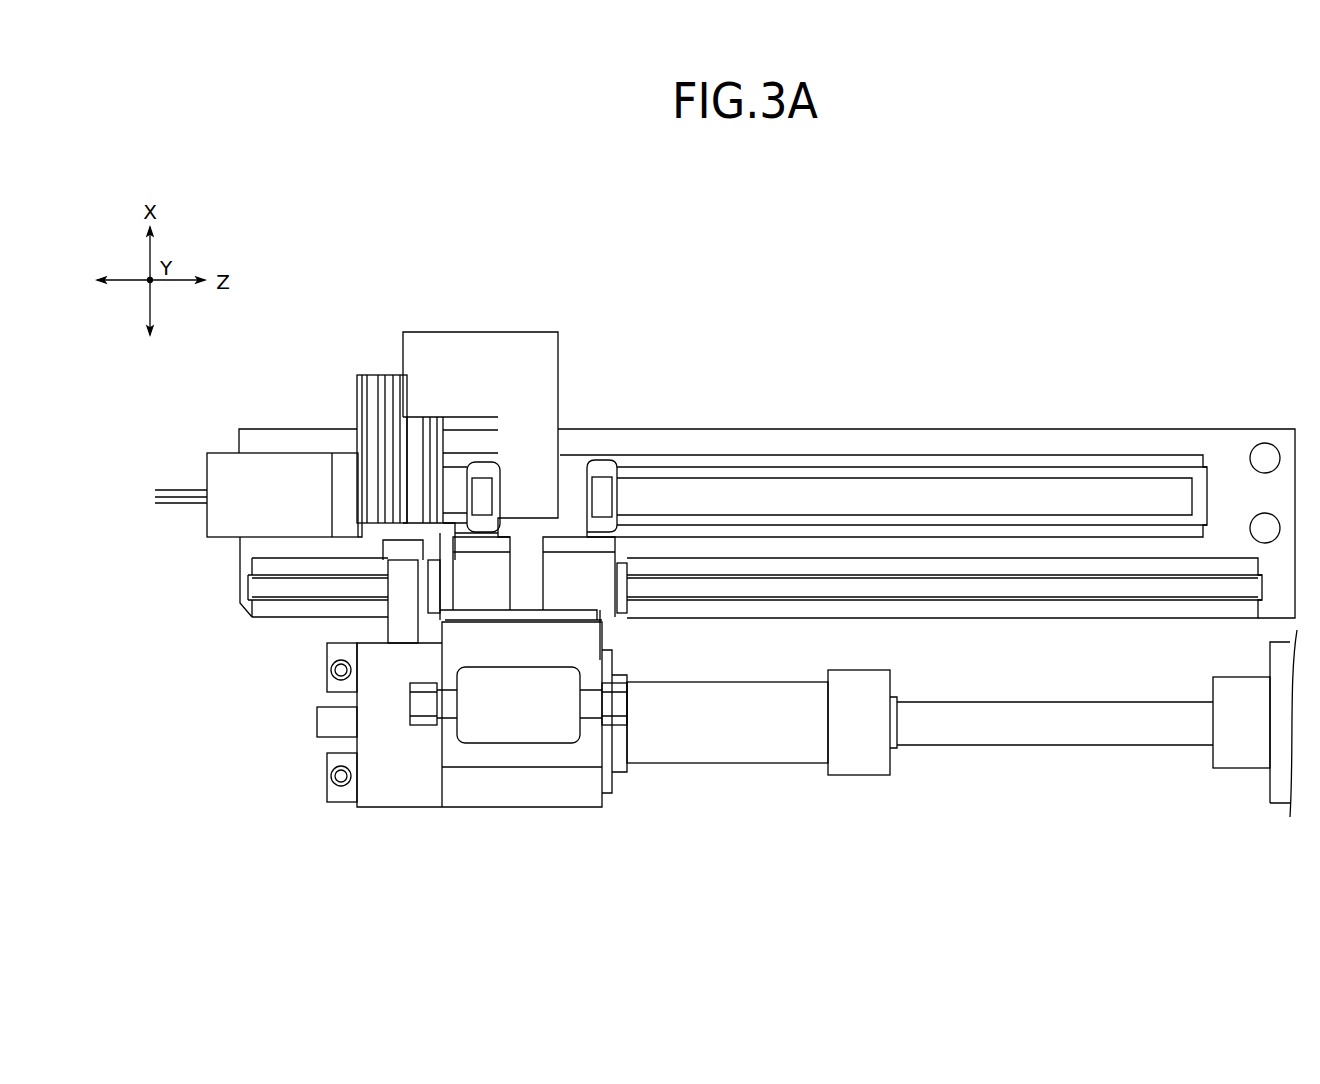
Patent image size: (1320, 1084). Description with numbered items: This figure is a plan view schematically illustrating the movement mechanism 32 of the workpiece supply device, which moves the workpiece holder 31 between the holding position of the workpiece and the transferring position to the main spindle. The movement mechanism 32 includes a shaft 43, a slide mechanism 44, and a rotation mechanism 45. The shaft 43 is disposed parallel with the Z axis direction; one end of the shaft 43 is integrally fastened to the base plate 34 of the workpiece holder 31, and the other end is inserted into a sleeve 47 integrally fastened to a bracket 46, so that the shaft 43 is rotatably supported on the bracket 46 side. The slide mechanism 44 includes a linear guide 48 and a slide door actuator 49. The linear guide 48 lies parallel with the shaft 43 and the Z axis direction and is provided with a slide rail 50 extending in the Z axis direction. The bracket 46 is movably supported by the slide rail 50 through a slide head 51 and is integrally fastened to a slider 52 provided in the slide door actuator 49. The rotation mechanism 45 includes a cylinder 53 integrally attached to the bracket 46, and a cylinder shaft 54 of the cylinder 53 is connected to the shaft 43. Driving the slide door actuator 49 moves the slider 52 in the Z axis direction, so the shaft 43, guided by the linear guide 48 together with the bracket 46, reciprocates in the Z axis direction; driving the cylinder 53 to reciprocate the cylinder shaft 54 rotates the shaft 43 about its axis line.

The workpiece holder 31 is at (1287, 773).
The movement mechanism 32 is at (887, 317).
The base plate 34 is at (1226, 784).
The shaft 43 is at (1030, 728).
The slide mechanism 44 is at (675, 408).
The rotation mechanism 45 is at (381, 588).
The bracket 46 is at (533, 808).
The sleeve 47 is at (745, 745).
The linear guide 48 is at (1105, 557).
The slide door actuator 49 is at (900, 473).
The slide rail 50 is at (990, 588).
The slide head 51 is at (595, 558).
The slider 52 is at (573, 470).
The cylinder 53 is at (370, 414).
The cylinder shaft 54 is at (403, 570).